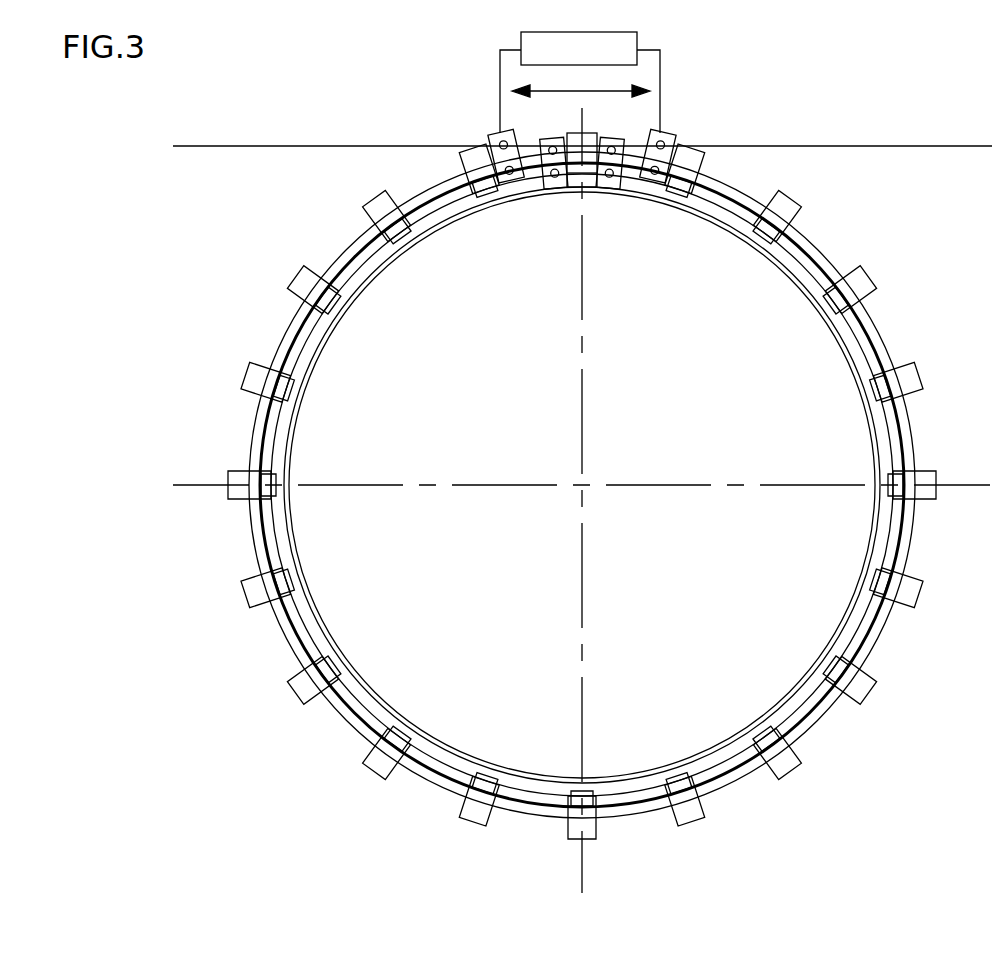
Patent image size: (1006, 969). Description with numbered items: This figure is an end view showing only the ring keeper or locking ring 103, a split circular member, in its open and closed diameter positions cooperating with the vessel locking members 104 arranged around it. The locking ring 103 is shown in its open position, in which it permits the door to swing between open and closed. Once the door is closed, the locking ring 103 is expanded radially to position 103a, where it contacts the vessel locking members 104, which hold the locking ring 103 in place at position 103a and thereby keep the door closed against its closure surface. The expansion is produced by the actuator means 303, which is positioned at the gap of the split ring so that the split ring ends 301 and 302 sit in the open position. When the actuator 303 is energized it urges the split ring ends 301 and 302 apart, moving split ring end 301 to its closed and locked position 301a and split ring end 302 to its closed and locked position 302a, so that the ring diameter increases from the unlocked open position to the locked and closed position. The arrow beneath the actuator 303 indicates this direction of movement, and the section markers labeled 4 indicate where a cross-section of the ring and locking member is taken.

The ring keeper or locking ring 103 is at (302, 365).
The expanded position of the locking ring 103a is at (278, 355).
The vessel locking member 104 is at (303, 278).
The split ring end 301 is at (607, 185).
The closed and locked position of split ring end 301a is at (680, 180).
The split ring end 302 is at (555, 185).
The closed and locked position of split ring end 302a is at (507, 180).
The actuator means 303 is at (521, 35).
The section line 4- 4 is at (795, 378).